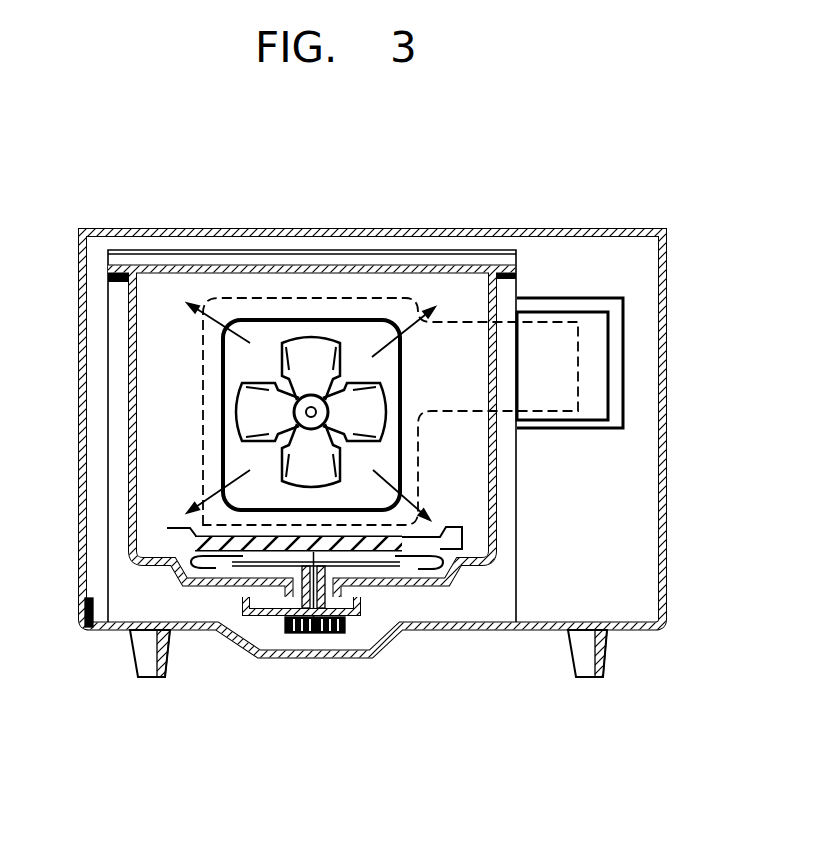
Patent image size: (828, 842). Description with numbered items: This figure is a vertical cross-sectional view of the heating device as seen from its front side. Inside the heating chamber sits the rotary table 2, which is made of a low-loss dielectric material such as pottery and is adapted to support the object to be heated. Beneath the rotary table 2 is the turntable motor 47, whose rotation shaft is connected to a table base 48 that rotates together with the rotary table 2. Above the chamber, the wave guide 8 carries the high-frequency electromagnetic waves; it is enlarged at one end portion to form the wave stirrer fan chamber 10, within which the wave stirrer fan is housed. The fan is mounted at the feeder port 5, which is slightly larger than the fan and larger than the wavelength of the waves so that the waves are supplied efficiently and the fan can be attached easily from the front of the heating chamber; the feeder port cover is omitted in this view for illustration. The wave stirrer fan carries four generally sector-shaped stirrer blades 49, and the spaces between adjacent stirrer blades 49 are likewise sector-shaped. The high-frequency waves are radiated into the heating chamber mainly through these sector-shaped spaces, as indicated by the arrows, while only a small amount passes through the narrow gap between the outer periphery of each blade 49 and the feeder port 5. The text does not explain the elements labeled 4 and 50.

The rotary table 2 is at (213, 533).
The magnetron 4 is at (597, 397).
The feeder port 5 is at (250, 317).
The wave guide 8 is at (332, 328).
The wave stirrer fan chamber 10 is at (307, 327).
The turntable motor 47 is at (298, 634).
The table base 48 is at (233, 565).
The stirrer blades 49 is at (378, 393).
The fan blade 50 is at (252, 380).